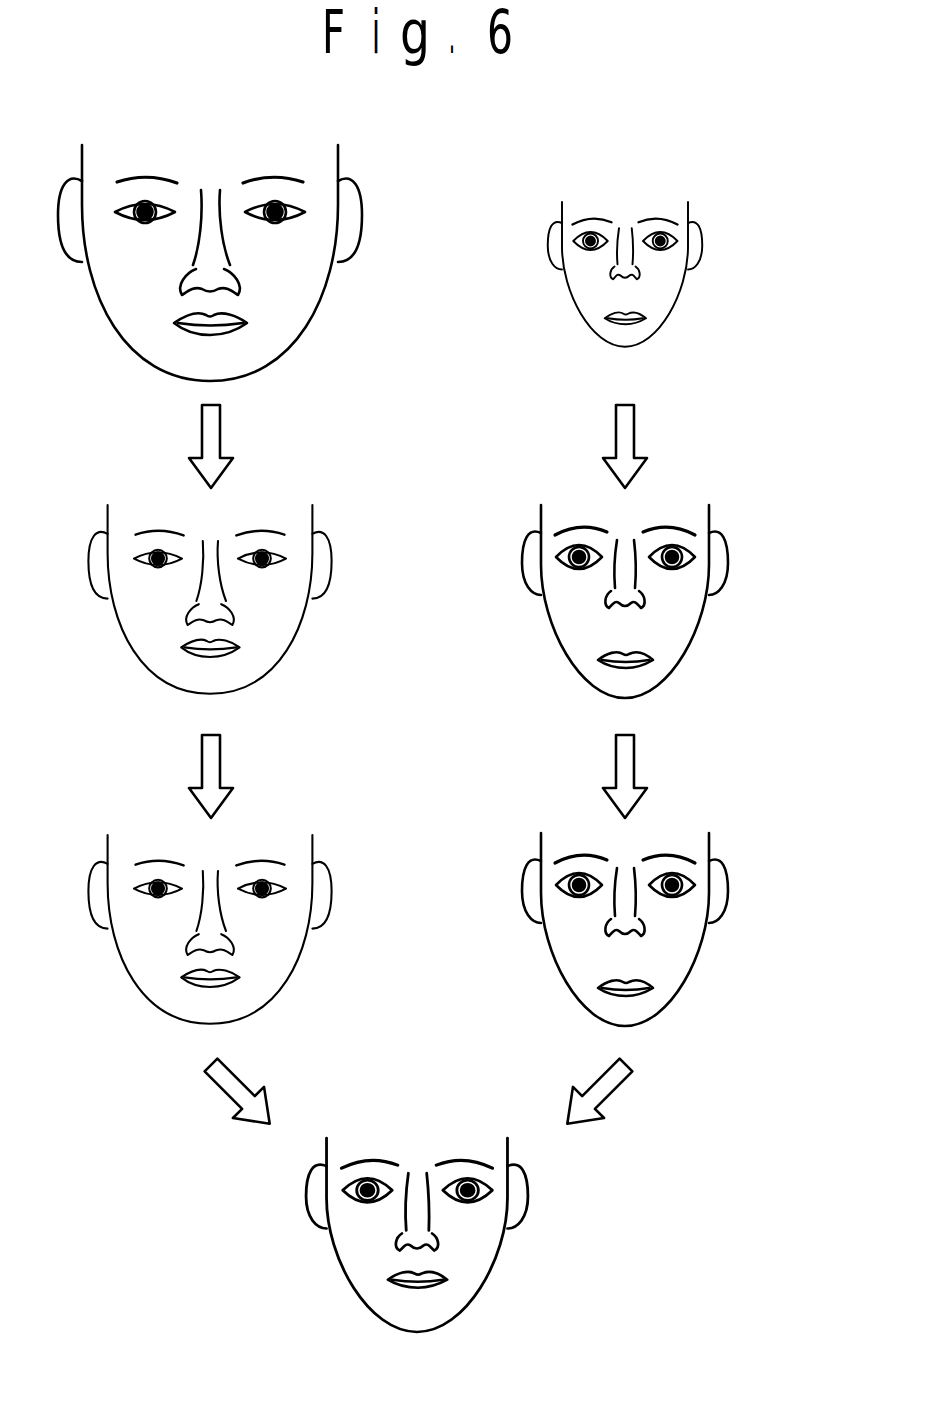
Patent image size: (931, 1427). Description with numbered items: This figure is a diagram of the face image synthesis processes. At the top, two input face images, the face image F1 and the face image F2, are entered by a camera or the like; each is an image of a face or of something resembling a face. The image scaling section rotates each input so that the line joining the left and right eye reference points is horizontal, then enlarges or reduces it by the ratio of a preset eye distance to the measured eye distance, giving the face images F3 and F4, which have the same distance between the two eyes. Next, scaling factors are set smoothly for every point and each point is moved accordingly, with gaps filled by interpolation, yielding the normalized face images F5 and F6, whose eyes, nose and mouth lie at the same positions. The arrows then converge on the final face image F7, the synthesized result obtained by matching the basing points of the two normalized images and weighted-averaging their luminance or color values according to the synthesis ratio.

The face image F1 is at (322, 305).
The face image F2 is at (685, 303).
The face image F3 is at (295, 633).
The face image F4 is at (700, 642).
The face image F5 is at (295, 963).
The face image F6 is at (697, 975).
The synthesized face image F7 is at (497, 1268).